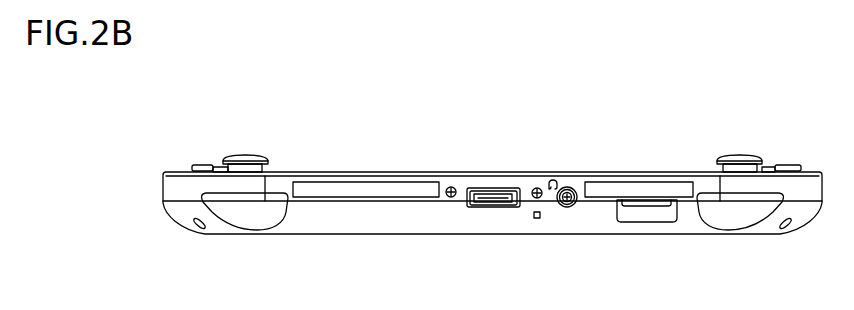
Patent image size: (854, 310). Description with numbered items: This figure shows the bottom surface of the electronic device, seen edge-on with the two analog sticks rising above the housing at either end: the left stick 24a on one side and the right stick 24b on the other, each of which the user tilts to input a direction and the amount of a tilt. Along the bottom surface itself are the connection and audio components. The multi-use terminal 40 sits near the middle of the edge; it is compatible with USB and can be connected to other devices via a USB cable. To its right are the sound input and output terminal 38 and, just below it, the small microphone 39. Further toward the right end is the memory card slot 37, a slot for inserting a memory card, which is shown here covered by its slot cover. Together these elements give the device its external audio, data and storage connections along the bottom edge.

The left stick 24a is at (243, 155).
The right stick 24b is at (741, 155).
The multi-use terminal 40 is at (491, 188).
The sound input and output terminal 38 is at (568, 187).
The microphone 39 is at (538, 219).
The memory card slot 37 is at (646, 223).